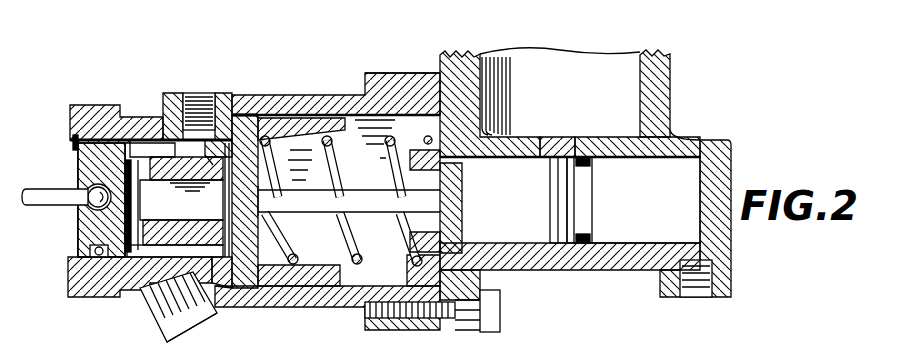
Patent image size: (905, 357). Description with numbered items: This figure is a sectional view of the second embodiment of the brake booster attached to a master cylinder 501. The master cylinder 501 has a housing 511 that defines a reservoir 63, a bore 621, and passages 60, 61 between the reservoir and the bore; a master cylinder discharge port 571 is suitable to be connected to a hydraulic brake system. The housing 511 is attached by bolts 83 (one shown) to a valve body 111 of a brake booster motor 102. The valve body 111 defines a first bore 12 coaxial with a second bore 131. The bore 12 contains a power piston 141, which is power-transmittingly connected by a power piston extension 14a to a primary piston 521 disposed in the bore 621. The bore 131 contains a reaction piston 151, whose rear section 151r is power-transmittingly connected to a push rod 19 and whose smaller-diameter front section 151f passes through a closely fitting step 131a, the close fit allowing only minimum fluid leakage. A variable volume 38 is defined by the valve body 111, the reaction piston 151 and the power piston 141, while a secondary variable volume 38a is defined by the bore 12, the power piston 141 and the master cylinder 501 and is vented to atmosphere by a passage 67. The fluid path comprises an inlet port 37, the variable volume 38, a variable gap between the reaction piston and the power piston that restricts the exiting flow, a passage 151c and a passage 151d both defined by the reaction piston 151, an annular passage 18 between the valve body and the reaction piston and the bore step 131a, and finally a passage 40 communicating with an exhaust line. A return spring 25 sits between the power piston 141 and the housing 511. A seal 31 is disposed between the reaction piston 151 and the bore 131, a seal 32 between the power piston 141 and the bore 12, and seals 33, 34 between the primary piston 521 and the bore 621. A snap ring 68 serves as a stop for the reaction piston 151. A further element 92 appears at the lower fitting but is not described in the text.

The first bore 12 is at (384, 288).
The power piston extension 14a is at (366, 205).
The passage 18 is at (152, 151).
The push rod 19 is at (60, 200).
The return spring 25 is at (390, 158).
The seal 31 is at (96, 297).
The seal 32 is at (336, 96).
The seal 33 is at (418, 150).
The seal 34 is at (592, 240).
The inlet port 37 is at (205, 290).
The variable volume 38 is at (226, 135).
The secondary variable volume 38a is at (349, 254).
The passage 40 is at (170, 135).
The passage 60 is at (586, 138).
The passage 61 is at (534, 140).
The reservoir 63 is at (640, 90).
The passage 67 is at (482, 278).
The snap ring 68 is at (72, 143).
The bolts 83 is at (502, 314).
The lower connection 92 is at (254, 321).
The brake booster motor 102 is at (181, 78).
The valve body 111 is at (386, 88).
The second bore 131 is at (135, 143).
The step 131a is at (150, 298).
The power piston 141 is at (253, 115).
The reaction piston 151 is at (120, 245).
The passage 151c is at (188, 200).
The passage 151d is at (175, 252).
The front section 151f is at (207, 157).
The rear section 151r is at (100, 250).
The master cylinder 501 is at (676, 126).
The housing 511 is at (676, 92).
The primary piston 521 is at (482, 208).
The master cylinder discharge port 571 is at (692, 292).
The bore 621 is at (676, 176).